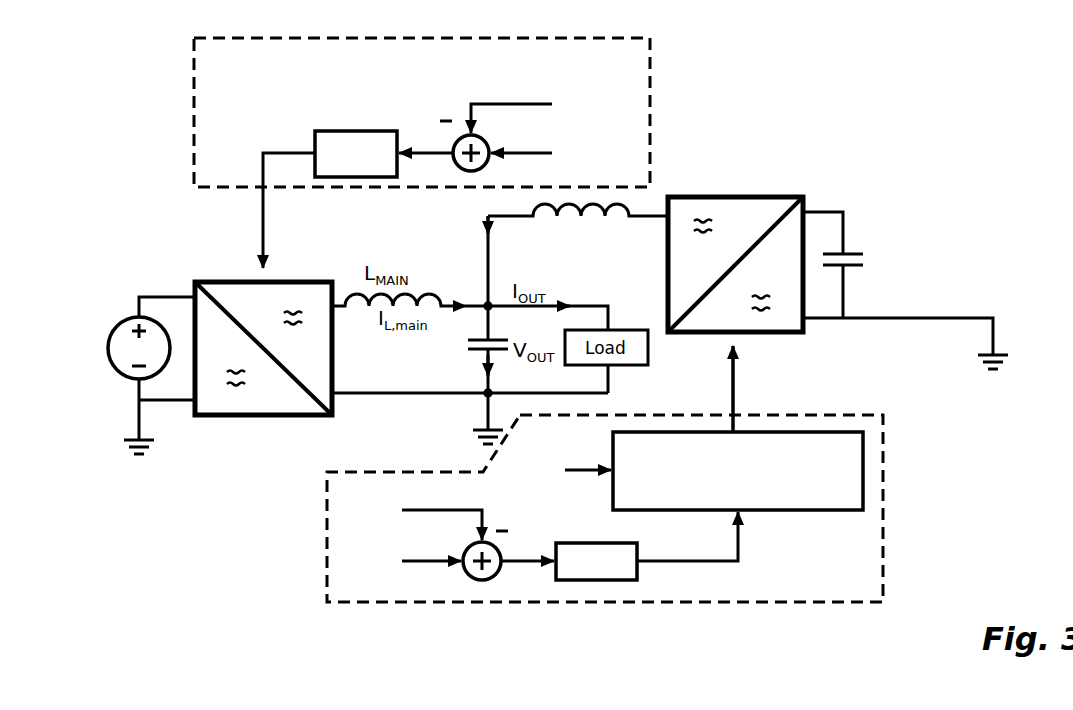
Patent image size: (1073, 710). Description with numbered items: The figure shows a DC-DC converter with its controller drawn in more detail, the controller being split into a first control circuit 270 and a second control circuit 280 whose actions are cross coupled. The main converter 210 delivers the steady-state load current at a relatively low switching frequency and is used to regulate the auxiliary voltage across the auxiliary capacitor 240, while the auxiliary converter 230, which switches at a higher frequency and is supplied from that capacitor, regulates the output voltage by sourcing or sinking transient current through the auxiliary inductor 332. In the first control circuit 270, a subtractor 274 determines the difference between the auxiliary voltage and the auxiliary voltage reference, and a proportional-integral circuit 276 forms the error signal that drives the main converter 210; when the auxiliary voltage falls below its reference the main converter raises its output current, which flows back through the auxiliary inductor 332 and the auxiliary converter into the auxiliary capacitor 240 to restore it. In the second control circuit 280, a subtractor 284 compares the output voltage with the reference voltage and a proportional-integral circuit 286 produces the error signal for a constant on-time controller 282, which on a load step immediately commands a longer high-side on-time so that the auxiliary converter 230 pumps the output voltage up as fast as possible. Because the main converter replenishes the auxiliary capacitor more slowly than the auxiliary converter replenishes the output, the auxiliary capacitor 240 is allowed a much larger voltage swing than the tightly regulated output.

The main converter 210 is at (180, 250).
The auxiliary converter 230 is at (806, 113).
The auxiliary capacitor C_AUX 240 is at (847, 252).
The first control circuit 270 is at (194, 82).
The subtractor 274 is at (455, 148).
The proportional-integral circuit 276 is at (318, 131).
The second control circuit 280 is at (327, 484).
The constant on-time (COT) controller 282 is at (863, 445).
The subtractor 284 is at (475, 580).
The proportional-integral (PI) circuit 286 is at (612, 580).
The auxiliary inductor L_AUX 332 is at (554, 229).